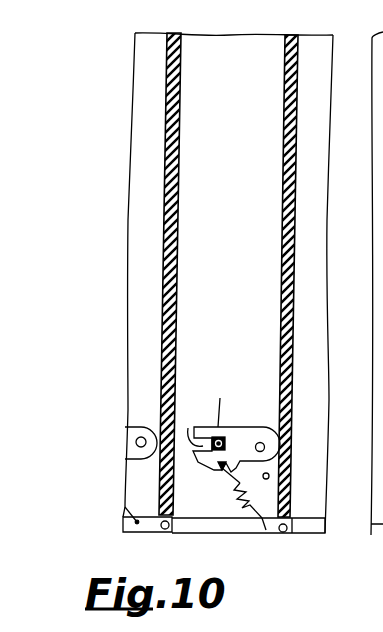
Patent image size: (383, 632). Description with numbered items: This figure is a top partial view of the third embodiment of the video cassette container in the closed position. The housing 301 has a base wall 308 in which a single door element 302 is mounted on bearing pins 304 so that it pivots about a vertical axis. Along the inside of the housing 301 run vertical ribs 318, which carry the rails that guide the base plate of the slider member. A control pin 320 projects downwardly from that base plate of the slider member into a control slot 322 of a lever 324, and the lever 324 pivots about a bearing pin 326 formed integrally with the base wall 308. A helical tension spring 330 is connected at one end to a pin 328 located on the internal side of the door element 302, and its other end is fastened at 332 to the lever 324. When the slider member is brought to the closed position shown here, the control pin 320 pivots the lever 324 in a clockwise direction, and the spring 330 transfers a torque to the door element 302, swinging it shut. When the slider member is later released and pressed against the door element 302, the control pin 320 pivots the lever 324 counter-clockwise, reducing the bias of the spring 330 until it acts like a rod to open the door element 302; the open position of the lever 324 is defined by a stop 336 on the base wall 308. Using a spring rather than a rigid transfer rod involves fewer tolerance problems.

The housing 301 is at (158, 157).
The vertical ribs 318 is at (287, 243).
The door element 302 is at (310, 520).
The base wall 308 is at (190, 500).
The bearing pins 304 is at (284, 532).
The lever 324 is at (250, 421).
The control pin 320 is at (220, 428).
The bearing pin 326 is at (329, 392).
The control slot 322 is at (188, 428).
The spring fastening point 332 is at (222, 468).
The helical tension spring 330 is at (236, 492).
The pin 328 is at (267, 530).
The stop 336 is at (330, 450).